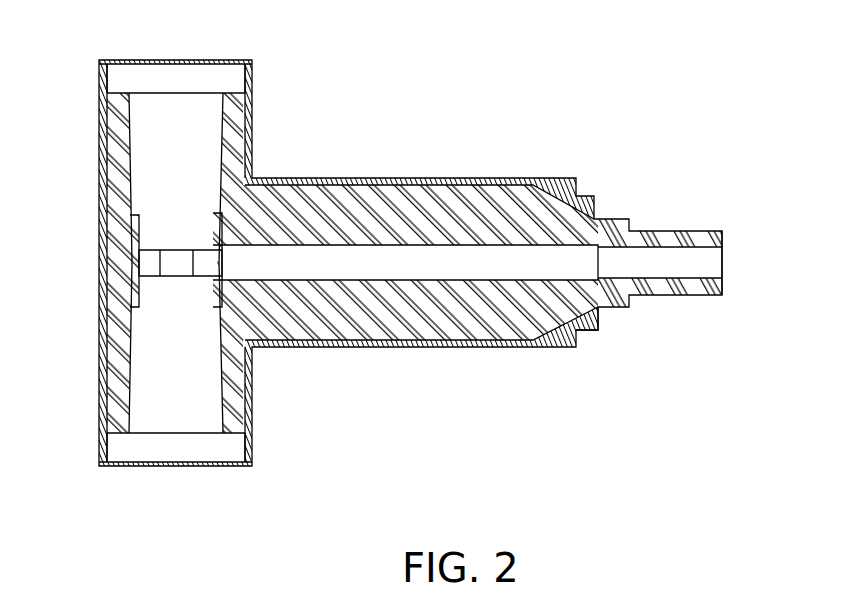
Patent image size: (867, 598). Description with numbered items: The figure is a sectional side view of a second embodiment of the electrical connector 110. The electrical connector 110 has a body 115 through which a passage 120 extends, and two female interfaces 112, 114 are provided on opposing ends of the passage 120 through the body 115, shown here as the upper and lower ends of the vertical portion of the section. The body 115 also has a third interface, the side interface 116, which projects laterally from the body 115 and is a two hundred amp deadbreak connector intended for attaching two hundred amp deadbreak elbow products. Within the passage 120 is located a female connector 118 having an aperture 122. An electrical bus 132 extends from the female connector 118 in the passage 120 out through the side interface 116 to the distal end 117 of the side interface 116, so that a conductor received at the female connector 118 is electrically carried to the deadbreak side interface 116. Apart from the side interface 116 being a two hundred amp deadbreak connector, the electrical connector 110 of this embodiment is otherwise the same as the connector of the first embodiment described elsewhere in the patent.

The electrical connector 110 is at (100, 178).
The female interface 112 is at (220, 60).
The female interface 114 is at (137, 467).
The body 115 is at (253, 367).
The side interface 116 is at (670, 232).
The distal end 117 is at (722, 257).
The female connector 118 is at (153, 267).
The passage 120 is at (162, 330).
The aperture 122 is at (182, 250).
The electrical bus 132 is at (577, 330).